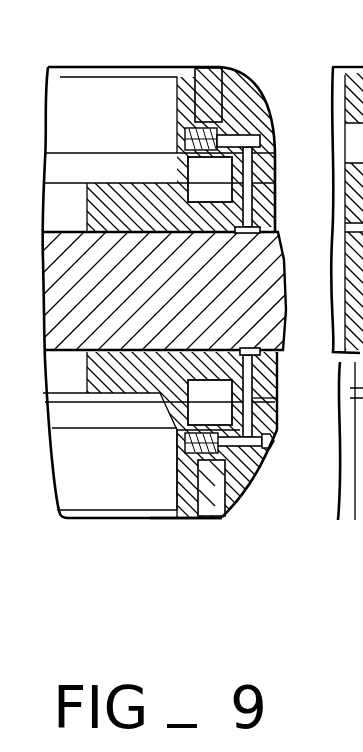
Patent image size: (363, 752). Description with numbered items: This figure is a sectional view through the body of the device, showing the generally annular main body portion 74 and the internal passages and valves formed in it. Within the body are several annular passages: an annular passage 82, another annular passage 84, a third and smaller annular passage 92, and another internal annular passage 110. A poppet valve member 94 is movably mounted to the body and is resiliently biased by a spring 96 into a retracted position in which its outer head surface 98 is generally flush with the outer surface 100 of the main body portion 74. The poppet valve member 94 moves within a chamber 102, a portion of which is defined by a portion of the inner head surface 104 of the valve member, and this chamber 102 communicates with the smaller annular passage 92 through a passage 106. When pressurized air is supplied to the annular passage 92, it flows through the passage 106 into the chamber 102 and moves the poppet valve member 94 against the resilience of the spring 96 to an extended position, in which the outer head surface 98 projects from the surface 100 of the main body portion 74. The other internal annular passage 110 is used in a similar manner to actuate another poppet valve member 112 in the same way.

The main body portion 74 is at (116, 523).
The annular passage 82 is at (176, 430).
The annular passage 84 is at (197, 203).
The annular passage 92 is at (273, 330).
The poppet valve member 94 is at (274, 466).
The spring 96 is at (196, 433).
The outer head surface 98 is at (280, 447).
The outer surface 100 is at (277, 373).
The chamber 102 is at (285, 406).
The inner head surface 104 is at (274, 437).
The passage 106 is at (173, 367).
The annular passage 110 is at (247, 234).
The poppet valve member 112 is at (269, 116).